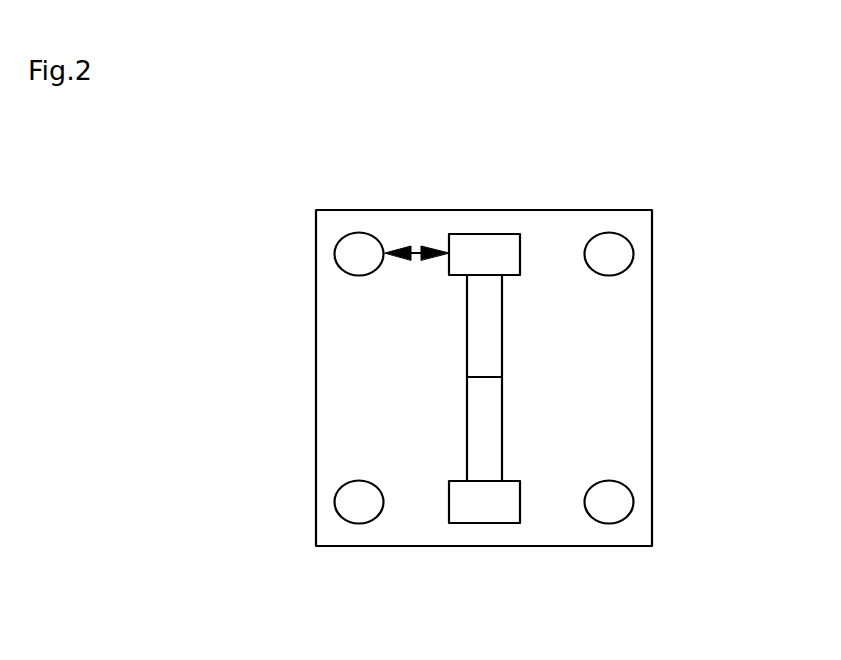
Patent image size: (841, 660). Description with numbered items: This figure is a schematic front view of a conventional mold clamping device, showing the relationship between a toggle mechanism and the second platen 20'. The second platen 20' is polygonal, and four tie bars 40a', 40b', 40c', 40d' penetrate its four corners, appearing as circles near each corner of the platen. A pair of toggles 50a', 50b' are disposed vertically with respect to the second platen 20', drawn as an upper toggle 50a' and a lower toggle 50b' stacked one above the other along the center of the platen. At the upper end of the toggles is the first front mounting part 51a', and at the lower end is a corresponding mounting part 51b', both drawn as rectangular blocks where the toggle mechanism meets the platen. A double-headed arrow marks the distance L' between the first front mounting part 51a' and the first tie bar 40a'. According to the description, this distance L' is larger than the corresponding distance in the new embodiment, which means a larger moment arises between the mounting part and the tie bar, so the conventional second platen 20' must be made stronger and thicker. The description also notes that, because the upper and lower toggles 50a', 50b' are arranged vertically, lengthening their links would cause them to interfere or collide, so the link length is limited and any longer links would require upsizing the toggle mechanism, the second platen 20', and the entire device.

The second platen 20' is at (484, 341).
The first tie bar 40a' is at (309, 255).
The tie bar 40b' is at (666, 504).
The tie bar 40c' is at (661, 255).
The tie bar 40d' is at (309, 505).
The upper toggle 50a' is at (527, 326).
The lower toggle 50b' is at (527, 429).
The first front mounting part 51a' is at (484, 205).
The second pad 51b' is at (484, 547).
The distance L' is at (417, 209).